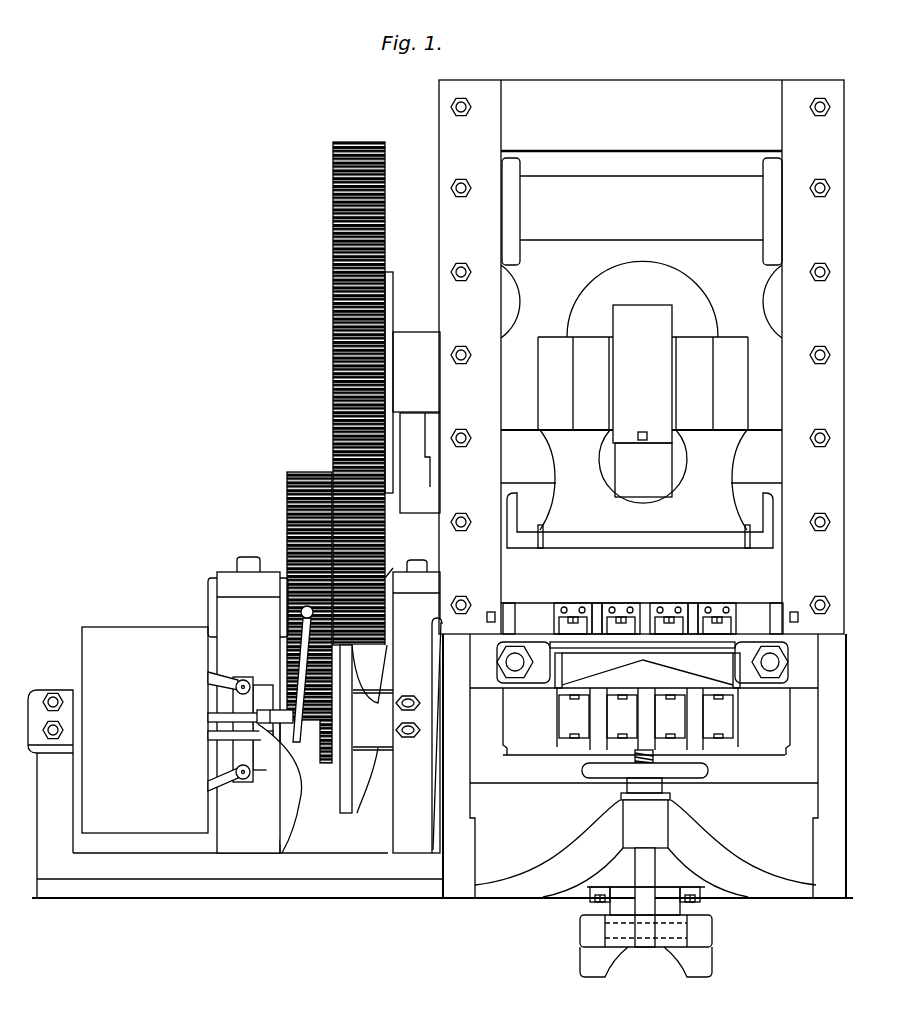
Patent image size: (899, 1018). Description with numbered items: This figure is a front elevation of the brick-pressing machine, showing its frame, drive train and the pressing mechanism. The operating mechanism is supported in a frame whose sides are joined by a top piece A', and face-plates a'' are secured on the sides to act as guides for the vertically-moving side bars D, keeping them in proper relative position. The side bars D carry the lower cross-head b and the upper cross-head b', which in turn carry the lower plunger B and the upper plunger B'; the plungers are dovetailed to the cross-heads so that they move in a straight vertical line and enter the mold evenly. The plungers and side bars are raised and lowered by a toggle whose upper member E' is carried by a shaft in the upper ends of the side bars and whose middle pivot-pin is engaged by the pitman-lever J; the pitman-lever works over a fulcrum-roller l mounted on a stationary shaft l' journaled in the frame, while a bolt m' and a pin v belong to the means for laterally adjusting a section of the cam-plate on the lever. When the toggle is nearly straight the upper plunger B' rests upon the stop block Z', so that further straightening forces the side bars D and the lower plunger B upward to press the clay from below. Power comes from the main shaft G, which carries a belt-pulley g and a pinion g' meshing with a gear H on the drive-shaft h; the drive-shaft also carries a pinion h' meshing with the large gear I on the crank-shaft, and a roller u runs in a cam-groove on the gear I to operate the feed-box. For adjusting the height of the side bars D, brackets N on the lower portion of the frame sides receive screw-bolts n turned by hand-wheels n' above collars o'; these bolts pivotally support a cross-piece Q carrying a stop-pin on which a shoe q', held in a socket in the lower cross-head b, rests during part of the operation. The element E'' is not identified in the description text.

The top piece A' is at (641, 337).
The face-plates a'' is at (640, 357).
The yoke arch E'' is at (658, 296).
The pitman-lever J is at (642, 374).
The bolt m' is at (643, 416).
The fulcrum-roller l is at (643, 466).
The stationary shaft l' is at (641, 480).
The upper member of the toggle E' is at (640, 520).
The stop block Z' is at (642, 601).
The upper cross-head b' is at (641, 584).
The upper plunger B' is at (645, 605).
The side bars D is at (487, 697).
The lower plunger B is at (633, 734).
The hand-wheels n' is at (680, 780).
The collars o' is at (639, 784).
The brackets N is at (645, 848).
The lower cross-head b is at (645, 813).
The screw-bolts n is at (633, 897).
The shoe q' is at (607, 914).
The cross-piece Q is at (585, 957).
The large gear I is at (333, 258).
The roller u is at (393, 310).
The pin v is at (420, 463).
The gear H is at (287, 490).
The drive-shaft h is at (231, 705).
The pinion h' is at (340, 674).
The main shaft G is at (213, 717).
The belt-pulley g is at (145, 730).
The pinion g' is at (304, 781).